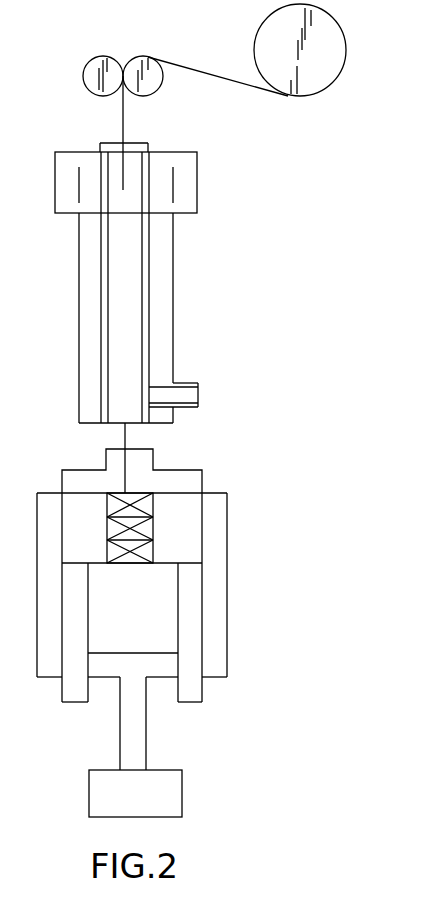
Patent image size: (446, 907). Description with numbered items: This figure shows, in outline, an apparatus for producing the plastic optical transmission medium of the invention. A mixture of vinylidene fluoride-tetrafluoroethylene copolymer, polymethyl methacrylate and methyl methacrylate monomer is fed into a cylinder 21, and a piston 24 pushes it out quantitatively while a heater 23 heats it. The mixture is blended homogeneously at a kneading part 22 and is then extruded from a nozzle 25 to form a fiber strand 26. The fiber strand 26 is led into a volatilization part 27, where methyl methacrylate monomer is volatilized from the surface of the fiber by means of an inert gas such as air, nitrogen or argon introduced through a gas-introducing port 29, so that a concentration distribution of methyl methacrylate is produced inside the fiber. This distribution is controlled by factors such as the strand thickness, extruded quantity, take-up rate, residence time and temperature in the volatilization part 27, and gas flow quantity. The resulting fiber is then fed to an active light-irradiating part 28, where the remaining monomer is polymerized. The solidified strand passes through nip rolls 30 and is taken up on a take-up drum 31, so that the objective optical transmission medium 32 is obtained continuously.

The cylinder 21 is at (197, 633).
The kneading part 22 is at (150, 527).
The heater 23 is at (217, 575).
The piston 24 is at (170, 665).
The nozzle 25 is at (192, 477).
The fiber strand 26 is at (124, 436).
The volatilization part 27 is at (138, 288).
The active light-irradiating part 28 is at (190, 181).
The gas-introducing port 29 is at (193, 383).
The nip rolls 30 is at (90, 76).
The take-up drum 31 is at (335, 47).
The optical transmission medium 32 is at (195, 69).